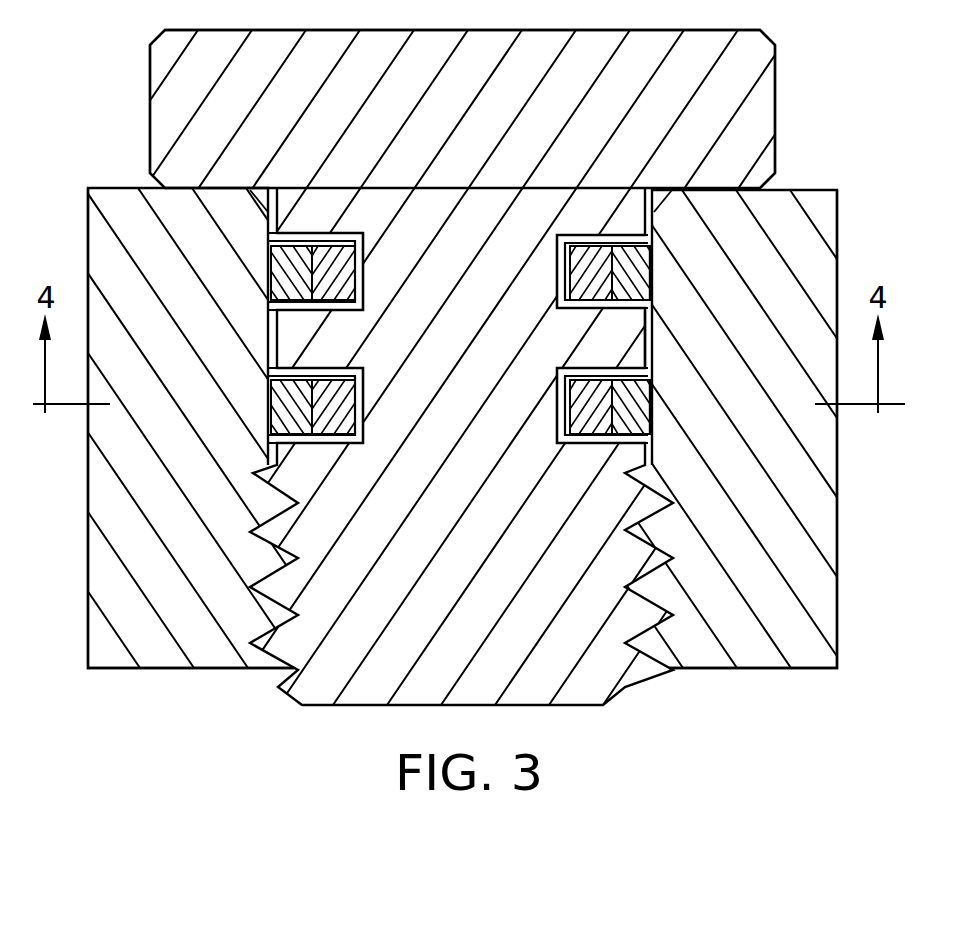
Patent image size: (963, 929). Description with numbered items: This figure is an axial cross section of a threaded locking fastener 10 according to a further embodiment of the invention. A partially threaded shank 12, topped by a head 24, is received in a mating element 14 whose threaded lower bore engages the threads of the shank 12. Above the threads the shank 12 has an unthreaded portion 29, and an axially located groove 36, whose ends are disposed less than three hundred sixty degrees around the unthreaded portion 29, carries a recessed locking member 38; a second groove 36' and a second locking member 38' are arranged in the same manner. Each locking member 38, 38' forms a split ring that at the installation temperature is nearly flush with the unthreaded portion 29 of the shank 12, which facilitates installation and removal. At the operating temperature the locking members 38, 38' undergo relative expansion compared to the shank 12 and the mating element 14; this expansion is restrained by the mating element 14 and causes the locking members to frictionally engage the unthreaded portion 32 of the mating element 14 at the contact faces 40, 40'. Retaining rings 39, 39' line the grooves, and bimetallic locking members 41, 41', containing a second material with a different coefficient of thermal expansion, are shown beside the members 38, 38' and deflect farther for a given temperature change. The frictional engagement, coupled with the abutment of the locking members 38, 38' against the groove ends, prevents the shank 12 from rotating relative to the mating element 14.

The sealed fastener assembly 10 is at (141, 44).
The partially threaded shank 12 is at (419, 603).
The mating element 14 is at (144, 503).
The bolt head 24 is at (778, 93).
The unthreaded portion of the shank 29 is at (648, 354).
The unthreaded portion of the mating element 32 is at (652, 334).
The groove 36 is at (441, 399).
The groove 36' is at (441, 269).
The recessed locking member 38 is at (441, 410).
The recessed locking member 38' is at (441, 275).
The retainer channel 39 is at (458, 428).
The retainer channel 39' is at (458, 291).
The sealing face 40 is at (687, 412).
The sealing face 40' is at (696, 275).
The bimetallic locking member 41 is at (481, 382).
The bimetallic locking member 41' is at (481, 241).